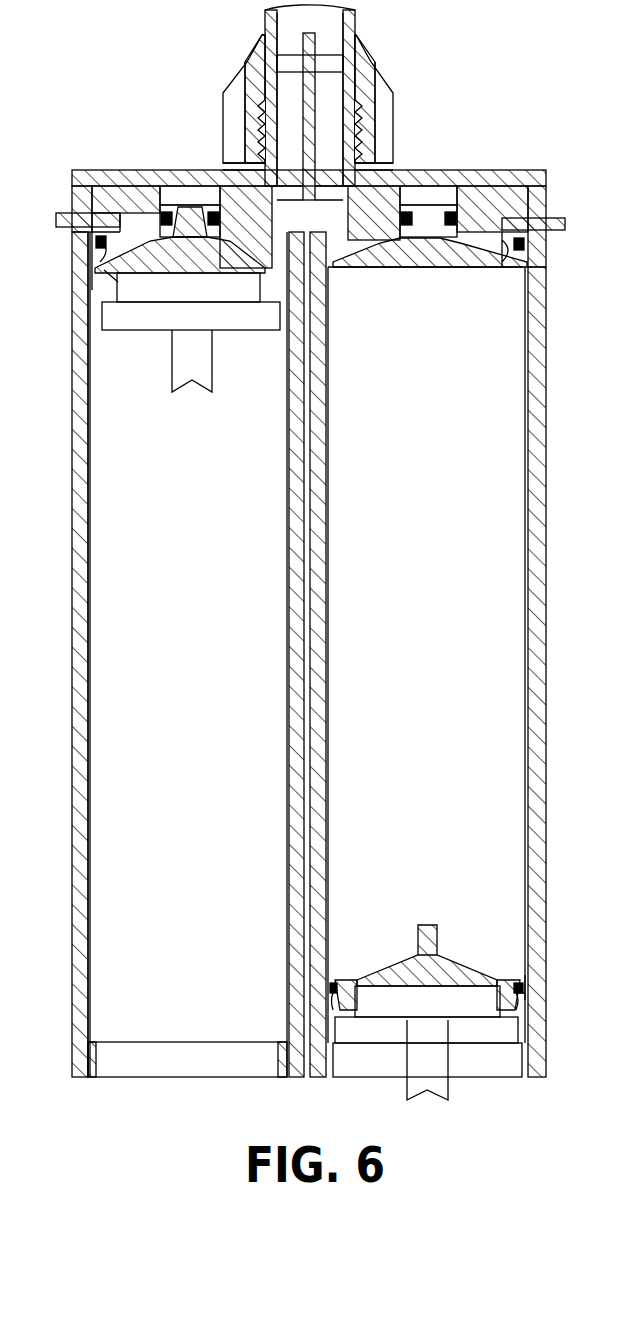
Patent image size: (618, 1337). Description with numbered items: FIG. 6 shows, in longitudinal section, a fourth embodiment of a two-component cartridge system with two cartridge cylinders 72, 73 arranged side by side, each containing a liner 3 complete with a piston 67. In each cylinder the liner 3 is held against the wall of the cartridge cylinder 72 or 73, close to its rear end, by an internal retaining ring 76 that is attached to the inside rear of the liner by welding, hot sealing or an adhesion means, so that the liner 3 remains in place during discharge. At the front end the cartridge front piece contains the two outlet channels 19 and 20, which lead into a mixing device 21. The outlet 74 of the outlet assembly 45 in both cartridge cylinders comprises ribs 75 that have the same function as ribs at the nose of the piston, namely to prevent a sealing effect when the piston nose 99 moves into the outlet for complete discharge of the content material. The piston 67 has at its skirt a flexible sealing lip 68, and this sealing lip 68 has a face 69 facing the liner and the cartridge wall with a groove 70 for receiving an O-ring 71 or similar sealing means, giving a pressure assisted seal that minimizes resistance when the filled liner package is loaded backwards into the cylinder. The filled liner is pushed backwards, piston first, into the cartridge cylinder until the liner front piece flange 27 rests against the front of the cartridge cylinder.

The liner 3 is at (90, 561).
The outlet channel 19 is at (270, 117).
The outlet channel 20 is at (350, 120).
The mixing device 21 is at (355, 26).
The liner front piece flange 27 is at (548, 218).
The outlet assembly 45 is at (415, 268).
The piston 67 is at (360, 966).
The flexible sealing lip 68 is at (513, 984).
The face 69 is at (530, 978).
The groove 70 is at (518, 983).
The O-ring 71 is at (530, 990).
The cartridge cylinder 72 is at (73, 512).
The cartridge cylinder 73 is at (557, 515).
The outlet 74 is at (153, 262).
The ribs 75 is at (228, 262).
The internal retaining ring 76 is at (96, 1060).
The piston nose 99 is at (426, 936).